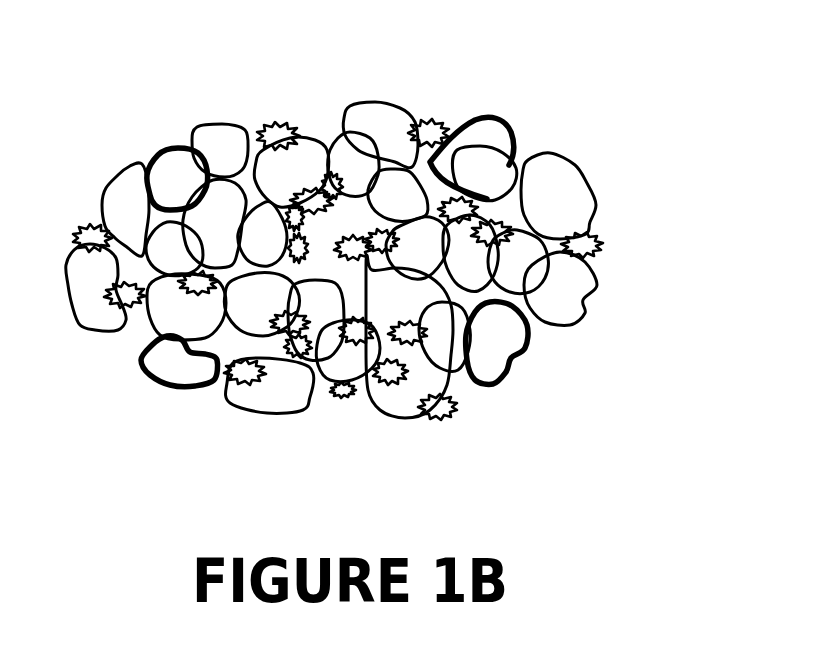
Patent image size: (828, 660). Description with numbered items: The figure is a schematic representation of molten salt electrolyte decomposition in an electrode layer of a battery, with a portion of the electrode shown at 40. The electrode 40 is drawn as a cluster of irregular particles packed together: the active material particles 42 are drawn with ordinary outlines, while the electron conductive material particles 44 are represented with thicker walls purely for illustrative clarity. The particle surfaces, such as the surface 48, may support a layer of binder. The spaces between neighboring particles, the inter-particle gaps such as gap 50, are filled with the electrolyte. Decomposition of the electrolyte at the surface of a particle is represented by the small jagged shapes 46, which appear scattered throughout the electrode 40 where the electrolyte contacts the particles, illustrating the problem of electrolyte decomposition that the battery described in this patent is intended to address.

The electrode portion 40 is at (608, 144).
The active material particles 42 is at (382, 125).
The electron conductive material particles 44 is at (172, 167).
The jagged shape 46 is at (278, 124).
The particle surface 48 is at (585, 185).
The inter-particle gap 50 is at (146, 318).